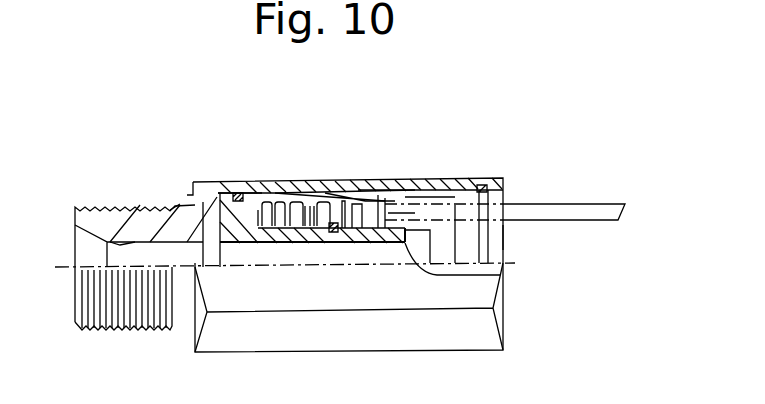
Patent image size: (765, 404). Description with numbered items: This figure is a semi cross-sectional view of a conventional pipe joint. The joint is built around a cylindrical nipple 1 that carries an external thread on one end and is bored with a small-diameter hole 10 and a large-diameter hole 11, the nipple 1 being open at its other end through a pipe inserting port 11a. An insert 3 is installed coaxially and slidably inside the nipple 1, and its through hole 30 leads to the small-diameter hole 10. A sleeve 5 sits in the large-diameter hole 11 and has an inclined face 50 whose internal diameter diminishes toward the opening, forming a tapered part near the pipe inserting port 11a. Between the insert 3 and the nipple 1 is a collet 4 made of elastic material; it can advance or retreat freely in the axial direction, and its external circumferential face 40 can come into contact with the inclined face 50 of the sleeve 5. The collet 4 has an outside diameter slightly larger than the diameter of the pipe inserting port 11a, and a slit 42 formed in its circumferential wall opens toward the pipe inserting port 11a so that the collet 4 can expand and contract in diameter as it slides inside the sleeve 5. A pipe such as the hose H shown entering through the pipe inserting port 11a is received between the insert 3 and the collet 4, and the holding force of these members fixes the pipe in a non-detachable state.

The nipple 1 is at (230, 182).
The insert 3 is at (382, 196).
The collet 4 is at (284, 198).
The sleeve 5 is at (448, 186).
The small-diameter hole 10 is at (107, 245).
The large-diameter hole 11 is at (493, 190).
The pipe inserting port 11a is at (505, 237).
The through hole 30 is at (503, 275).
The external circumferential face 40 is at (347, 200).
The slit 42 is at (300, 197).
The inclined face 50 is at (395, 200).
The hose H is at (572, 203).